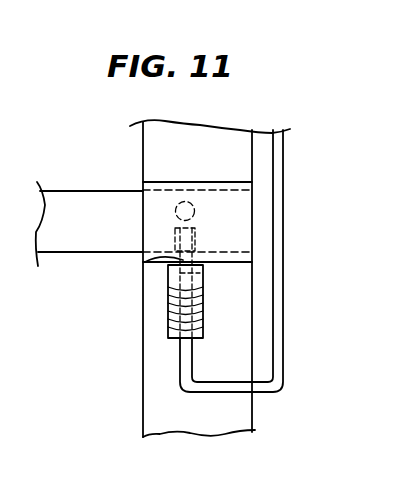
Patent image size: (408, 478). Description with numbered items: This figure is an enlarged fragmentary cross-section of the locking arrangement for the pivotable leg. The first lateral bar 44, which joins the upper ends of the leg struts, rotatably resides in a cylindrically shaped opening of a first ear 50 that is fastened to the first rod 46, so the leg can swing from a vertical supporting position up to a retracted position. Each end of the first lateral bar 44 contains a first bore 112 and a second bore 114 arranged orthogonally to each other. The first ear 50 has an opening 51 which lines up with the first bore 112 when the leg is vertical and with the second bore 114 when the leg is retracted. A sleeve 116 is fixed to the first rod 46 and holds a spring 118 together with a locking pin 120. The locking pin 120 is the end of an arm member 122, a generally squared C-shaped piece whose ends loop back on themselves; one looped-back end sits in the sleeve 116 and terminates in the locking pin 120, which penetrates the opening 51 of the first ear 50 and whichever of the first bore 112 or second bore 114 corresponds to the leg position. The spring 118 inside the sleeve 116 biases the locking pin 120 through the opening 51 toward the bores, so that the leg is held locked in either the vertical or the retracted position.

The first lateral bar 44 is at (79, 202).
The first rod 46 is at (250, 417).
The first ear 50 is at (212, 191).
The opening 51 is at (147, 260).
The first bore 112 is at (195, 235).
The second bore 114 is at (178, 218).
The sleeve 116 is at (168, 330).
The spring 118 is at (168, 310).
The locking pin 120 is at (200, 273).
The arm member 122 is at (280, 363).